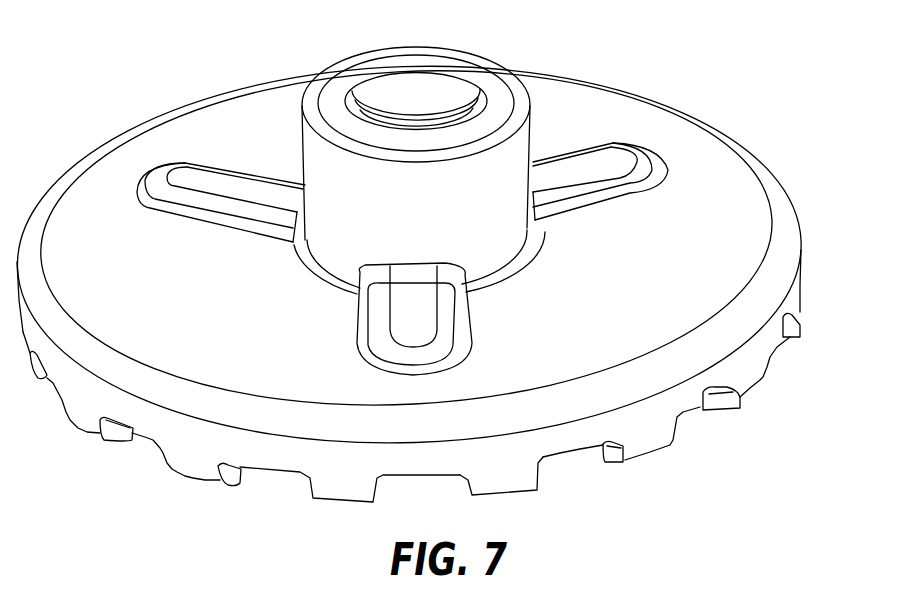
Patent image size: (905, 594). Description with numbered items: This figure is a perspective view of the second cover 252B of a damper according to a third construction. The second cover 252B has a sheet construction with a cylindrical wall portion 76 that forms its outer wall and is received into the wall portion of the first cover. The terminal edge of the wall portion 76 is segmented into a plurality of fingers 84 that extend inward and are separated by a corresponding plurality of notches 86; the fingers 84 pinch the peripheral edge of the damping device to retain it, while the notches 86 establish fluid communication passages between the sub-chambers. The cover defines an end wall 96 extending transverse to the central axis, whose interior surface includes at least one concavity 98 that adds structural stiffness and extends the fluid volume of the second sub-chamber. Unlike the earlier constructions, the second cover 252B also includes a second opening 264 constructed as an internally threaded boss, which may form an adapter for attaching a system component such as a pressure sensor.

The second cover 252B is at (697, 78).
The second opening 264 is at (377, 103).
The concavity 98 is at (427, 320).
The end wall 96 is at (630, 337).
The wall portion 76 is at (737, 367).
The fingers 84 is at (227, 485).
The notches 86 is at (553, 462).